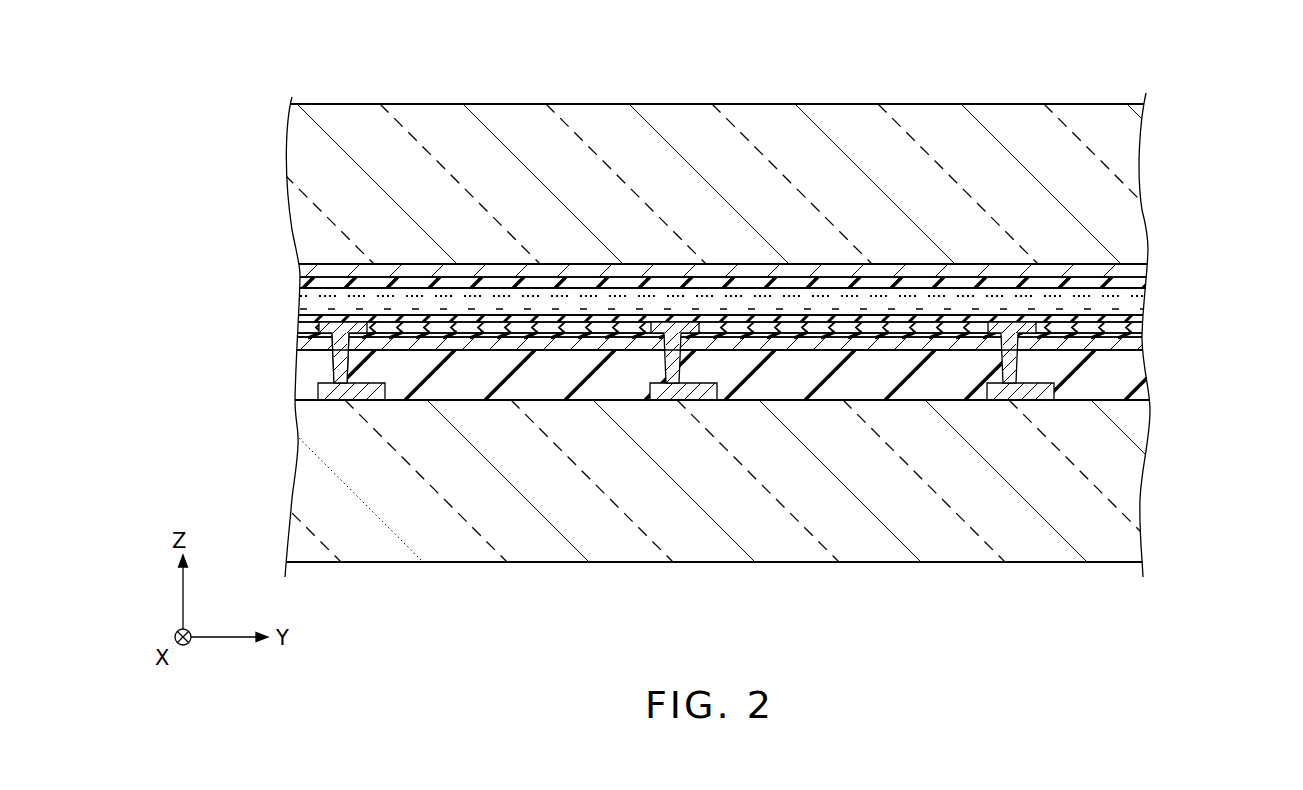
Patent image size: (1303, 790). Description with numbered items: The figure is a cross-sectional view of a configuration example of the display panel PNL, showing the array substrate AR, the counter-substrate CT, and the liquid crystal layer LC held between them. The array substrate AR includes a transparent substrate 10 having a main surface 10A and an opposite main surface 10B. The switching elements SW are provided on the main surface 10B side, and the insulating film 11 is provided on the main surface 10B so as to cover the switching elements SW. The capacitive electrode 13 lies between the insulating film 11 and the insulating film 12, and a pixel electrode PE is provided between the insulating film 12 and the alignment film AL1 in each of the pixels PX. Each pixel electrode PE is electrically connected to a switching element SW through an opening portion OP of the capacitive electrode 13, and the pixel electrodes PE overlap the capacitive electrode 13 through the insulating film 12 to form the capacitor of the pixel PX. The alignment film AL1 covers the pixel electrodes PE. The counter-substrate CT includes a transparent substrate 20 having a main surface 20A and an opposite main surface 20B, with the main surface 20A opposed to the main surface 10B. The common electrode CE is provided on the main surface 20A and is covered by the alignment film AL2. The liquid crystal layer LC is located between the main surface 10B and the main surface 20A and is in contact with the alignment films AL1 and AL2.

The display panel PNL is at (1126, 94).
The counter-substrate CT is at (1174, 170).
The array substrate AR is at (1172, 458).
The transparent substrate 20 is at (1140, 210).
The main surface 20A is at (884, 272).
The main surface 20B is at (938, 92).
The common electrode CE is at (1140, 272).
The alignment film AL2 is at (1140, 282).
The liquid crystal layer LC is at (1133, 310).
The alignment film AL1 is at (300, 318).
The insulating film 12 is at (297, 327).
The pixel electrode PE is at (517, 333).
The capacitive electrode 13 is at (300, 343).
The insulating film 11 is at (305, 386).
The opening portion OP is at (332, 355).
The switching element SW is at (335, 402).
The transparent substrate 10 is at (303, 508).
The main surface 10A is at (930, 575).
The main surface 10B is at (855, 386).
The pixel PX is at (519, 389).